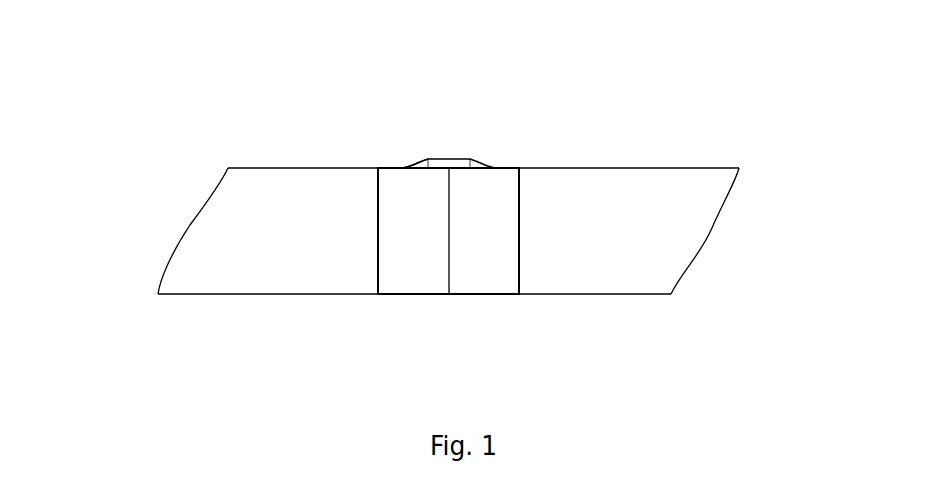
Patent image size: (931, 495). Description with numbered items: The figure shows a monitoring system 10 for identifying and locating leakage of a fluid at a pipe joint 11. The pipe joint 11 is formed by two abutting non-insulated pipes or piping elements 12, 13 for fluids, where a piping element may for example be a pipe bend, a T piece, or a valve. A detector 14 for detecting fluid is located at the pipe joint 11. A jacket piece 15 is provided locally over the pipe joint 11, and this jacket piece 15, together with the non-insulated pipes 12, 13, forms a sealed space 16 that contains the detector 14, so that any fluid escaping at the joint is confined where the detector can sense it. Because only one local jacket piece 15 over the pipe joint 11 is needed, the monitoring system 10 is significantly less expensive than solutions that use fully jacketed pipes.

The monitoring system 10 is at (228, 120).
The pipe joint 11 is at (449, 245).
The non-insulated pipe 12 is at (278, 209).
The non-insulated pipe 13 is at (677, 208).
The detector 14 is at (463, 163).
The jacket piece 15 is at (519, 233).
The sealed space 16 is at (416, 167).